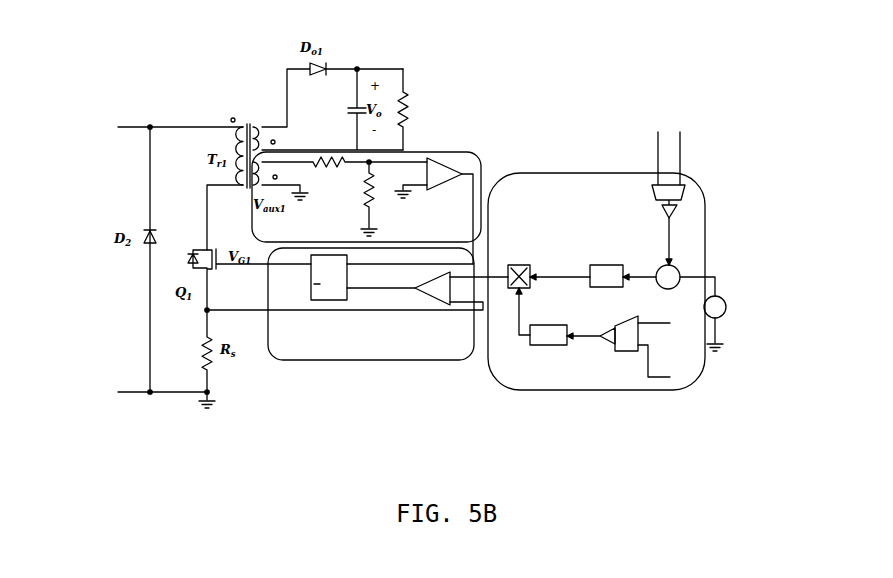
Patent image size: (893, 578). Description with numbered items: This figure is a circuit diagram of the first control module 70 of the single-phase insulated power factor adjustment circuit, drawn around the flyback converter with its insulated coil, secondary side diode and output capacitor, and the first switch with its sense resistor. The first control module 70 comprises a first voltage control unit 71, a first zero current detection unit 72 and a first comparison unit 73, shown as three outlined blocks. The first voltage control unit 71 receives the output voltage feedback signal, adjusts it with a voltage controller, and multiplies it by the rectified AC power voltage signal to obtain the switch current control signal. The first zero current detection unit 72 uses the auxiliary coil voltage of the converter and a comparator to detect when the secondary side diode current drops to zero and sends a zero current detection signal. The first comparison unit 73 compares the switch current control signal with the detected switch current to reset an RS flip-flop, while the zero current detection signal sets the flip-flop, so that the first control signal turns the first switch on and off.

The first control module 70 is at (499, 297).
The first voltage control unit 71 is at (598, 278).
The first zero current detection unit 72 is at (253, 242).
The first comparison unit 73 is at (358, 360).